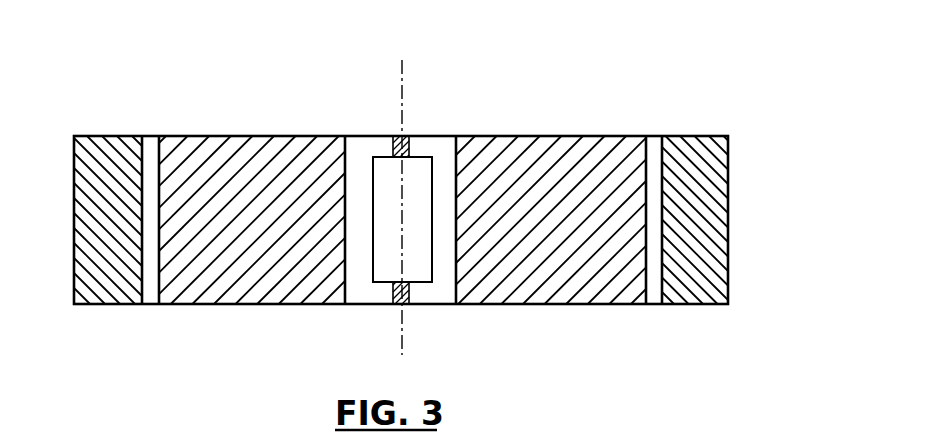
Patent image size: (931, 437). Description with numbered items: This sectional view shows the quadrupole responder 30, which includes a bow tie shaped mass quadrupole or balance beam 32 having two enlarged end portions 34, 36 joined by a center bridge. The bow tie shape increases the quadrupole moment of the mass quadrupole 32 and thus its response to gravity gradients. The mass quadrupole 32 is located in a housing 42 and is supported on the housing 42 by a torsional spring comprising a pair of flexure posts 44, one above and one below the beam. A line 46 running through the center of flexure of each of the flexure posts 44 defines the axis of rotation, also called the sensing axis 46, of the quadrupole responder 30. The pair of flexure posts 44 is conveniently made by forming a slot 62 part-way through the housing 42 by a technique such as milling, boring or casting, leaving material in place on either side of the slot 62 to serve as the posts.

The quadrupole responder 30 is at (455, 212).
The mass quadrupole 32 is at (573, 306).
The first enlarged end portion 34 is at (253, 148).
The second enlarged end portion 36 is at (590, 142).
The housing 42 is at (101, 144).
The flexure posts 44 is at (407, 137).
The sensing axis 46 is at (402, 73).
The slot 62 is at (378, 257).